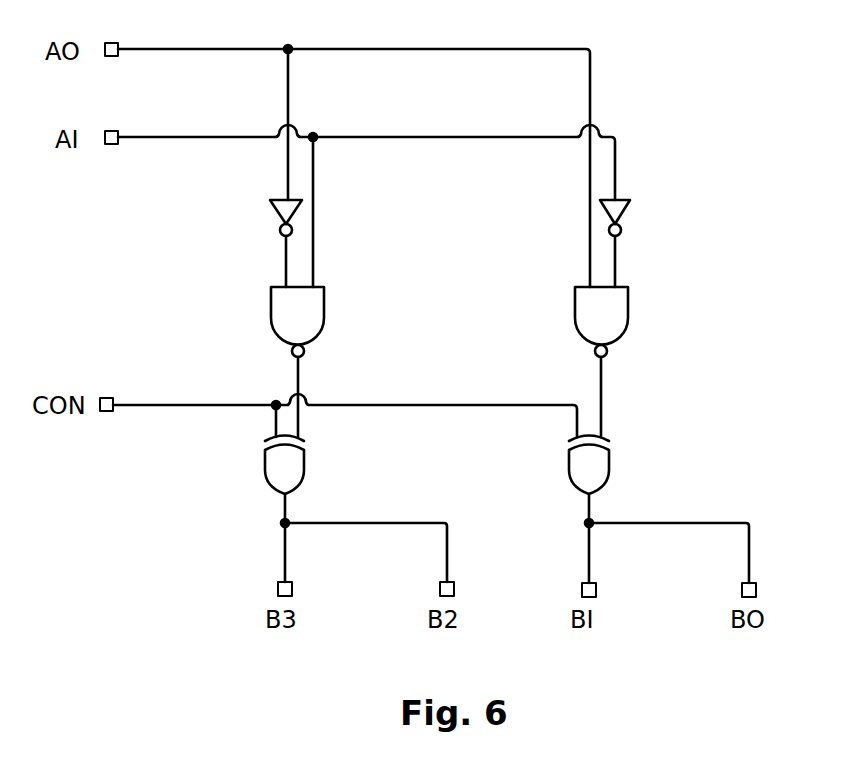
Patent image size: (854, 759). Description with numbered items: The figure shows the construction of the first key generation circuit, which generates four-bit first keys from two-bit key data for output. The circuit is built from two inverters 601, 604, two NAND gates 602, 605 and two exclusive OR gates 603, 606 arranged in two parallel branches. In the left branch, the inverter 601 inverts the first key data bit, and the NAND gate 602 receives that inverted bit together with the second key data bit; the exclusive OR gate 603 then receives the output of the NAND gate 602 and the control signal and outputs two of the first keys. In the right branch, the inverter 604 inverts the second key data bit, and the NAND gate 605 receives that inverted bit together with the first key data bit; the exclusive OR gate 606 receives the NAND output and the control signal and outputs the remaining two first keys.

The inverter 601 is at (268, 209).
The NAND gate 602 is at (268, 305).
The exclusive OR gate 603 is at (258, 464).
The inverter 604 is at (630, 214).
The NAND gate 605 is at (634, 311).
The exclusive OR gate 606 is at (620, 468).